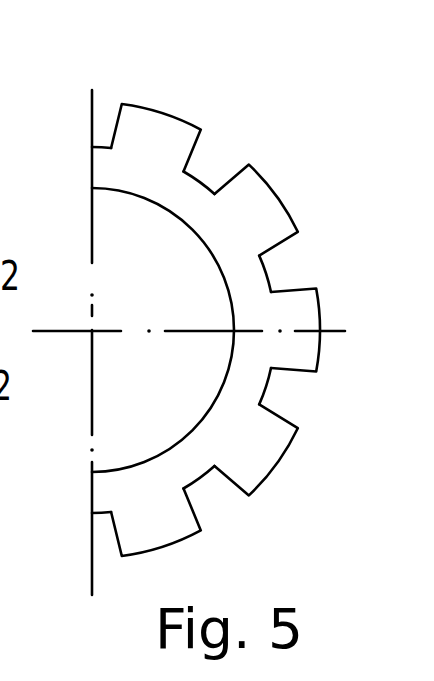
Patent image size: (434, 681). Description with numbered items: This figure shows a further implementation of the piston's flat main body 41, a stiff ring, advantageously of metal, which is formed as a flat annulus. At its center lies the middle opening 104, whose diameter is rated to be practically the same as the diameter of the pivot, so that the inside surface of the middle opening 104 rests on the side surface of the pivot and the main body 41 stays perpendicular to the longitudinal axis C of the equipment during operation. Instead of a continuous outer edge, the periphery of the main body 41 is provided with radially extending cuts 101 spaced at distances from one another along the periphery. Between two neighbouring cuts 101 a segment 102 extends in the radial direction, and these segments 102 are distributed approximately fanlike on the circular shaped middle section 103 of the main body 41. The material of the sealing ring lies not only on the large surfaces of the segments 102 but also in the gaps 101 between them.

The cuts 101 is at (102, 130).
The segments 102 is at (155, 133).
The circular shaped middle section 103 is at (187, 198).
The middle opening 104 is at (225, 377).
The main body 41 is at (152, 434).
The longitudinal axis C is at (92, 330).